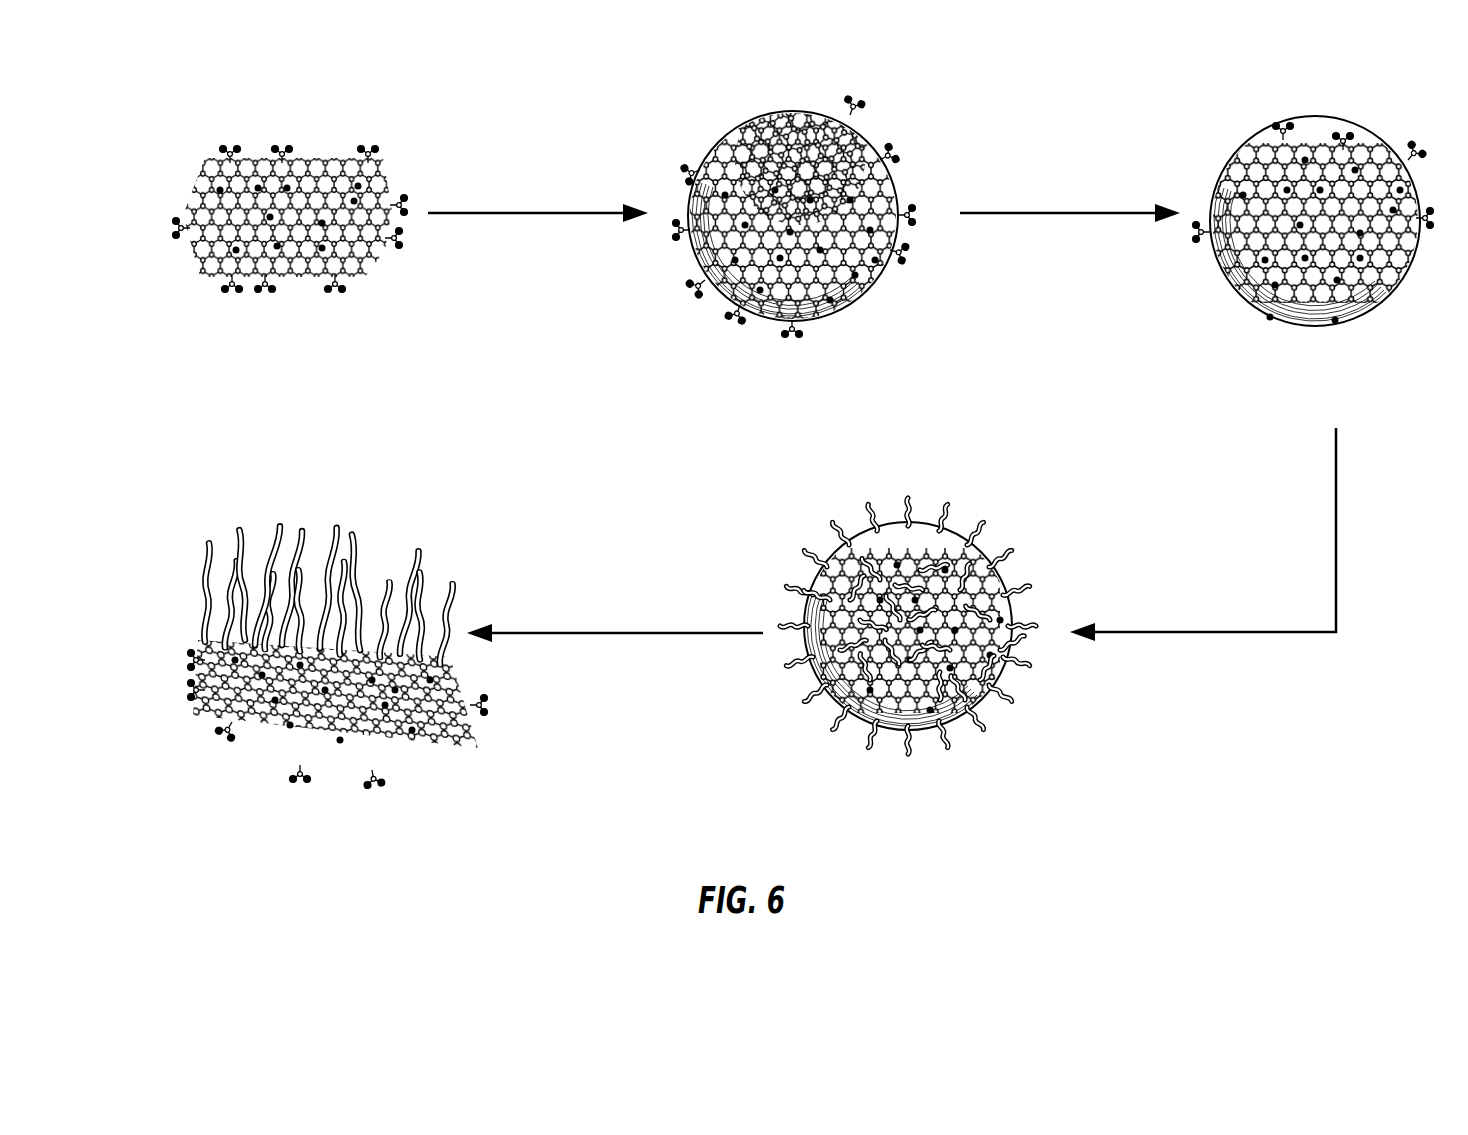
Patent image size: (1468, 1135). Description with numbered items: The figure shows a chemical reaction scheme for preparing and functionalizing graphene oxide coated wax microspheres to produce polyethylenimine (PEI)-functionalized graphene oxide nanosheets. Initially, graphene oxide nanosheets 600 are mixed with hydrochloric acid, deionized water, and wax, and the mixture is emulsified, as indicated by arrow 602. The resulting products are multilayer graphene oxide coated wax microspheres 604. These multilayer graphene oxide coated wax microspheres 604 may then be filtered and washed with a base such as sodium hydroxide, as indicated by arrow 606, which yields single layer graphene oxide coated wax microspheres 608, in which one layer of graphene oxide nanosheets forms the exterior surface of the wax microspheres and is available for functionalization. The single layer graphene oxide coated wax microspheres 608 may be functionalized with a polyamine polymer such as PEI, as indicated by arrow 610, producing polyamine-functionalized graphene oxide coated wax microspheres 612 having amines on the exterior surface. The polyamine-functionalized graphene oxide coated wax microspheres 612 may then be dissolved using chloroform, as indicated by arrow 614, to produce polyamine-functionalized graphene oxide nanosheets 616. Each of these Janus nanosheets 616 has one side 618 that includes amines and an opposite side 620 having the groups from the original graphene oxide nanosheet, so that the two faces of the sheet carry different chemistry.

The graphene oxide nanosheets 600 is at (232, 130).
The emulsification arrow 602 is at (458, 213).
The multilayer graphene oxide coated wax microspheres 604 is at (701, 130).
The washing arrow 606 is at (1000, 213).
The single layer graphene oxide coated wax microspheres 608 is at (1227, 130).
The PEI functionalization arrow 610 is at (1336, 557).
The polyamine-functionalized graphene oxide coated wax microspheres 612 is at (804, 497).
The chloroform dissolution arrow 614 is at (538, 633).
The polyamine-functionalized graphene oxide nanosheets 616 is at (298, 521).
The side including amines 618 is at (177, 635).
The opposite side 620 is at (217, 754).